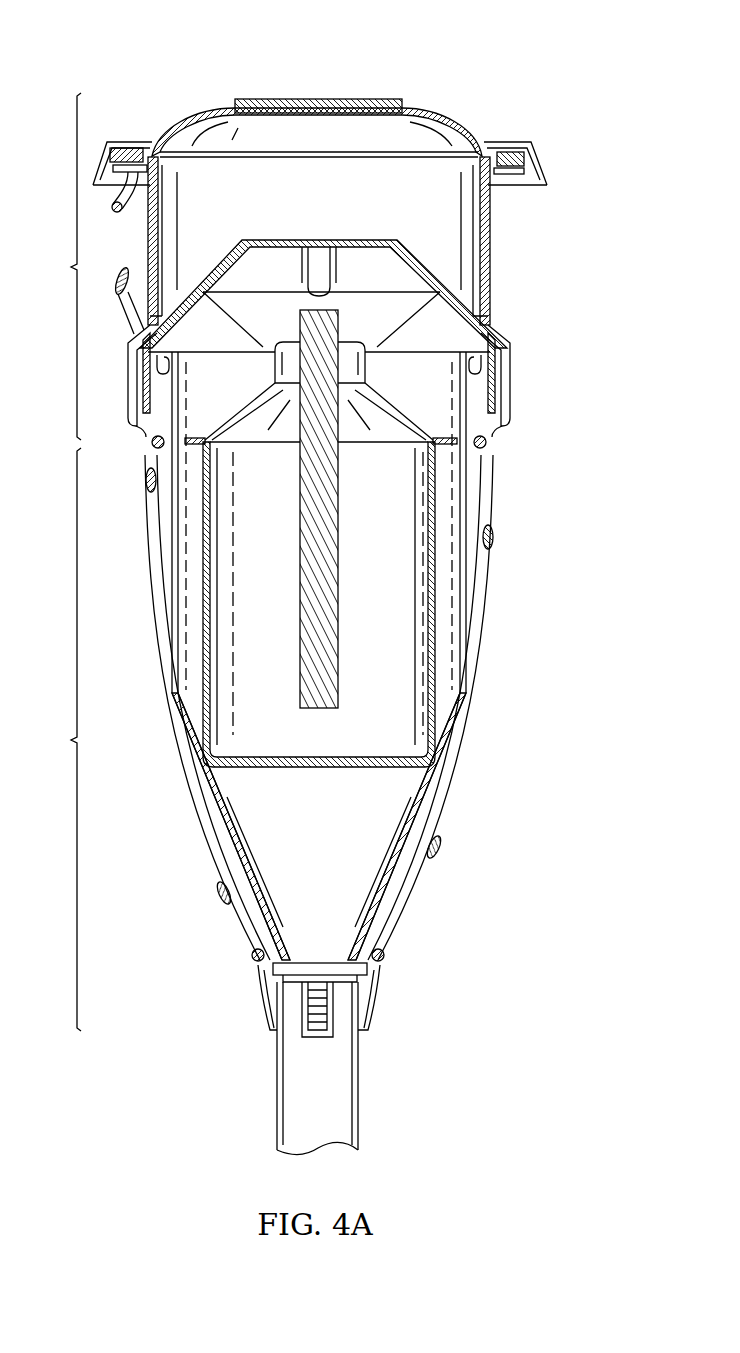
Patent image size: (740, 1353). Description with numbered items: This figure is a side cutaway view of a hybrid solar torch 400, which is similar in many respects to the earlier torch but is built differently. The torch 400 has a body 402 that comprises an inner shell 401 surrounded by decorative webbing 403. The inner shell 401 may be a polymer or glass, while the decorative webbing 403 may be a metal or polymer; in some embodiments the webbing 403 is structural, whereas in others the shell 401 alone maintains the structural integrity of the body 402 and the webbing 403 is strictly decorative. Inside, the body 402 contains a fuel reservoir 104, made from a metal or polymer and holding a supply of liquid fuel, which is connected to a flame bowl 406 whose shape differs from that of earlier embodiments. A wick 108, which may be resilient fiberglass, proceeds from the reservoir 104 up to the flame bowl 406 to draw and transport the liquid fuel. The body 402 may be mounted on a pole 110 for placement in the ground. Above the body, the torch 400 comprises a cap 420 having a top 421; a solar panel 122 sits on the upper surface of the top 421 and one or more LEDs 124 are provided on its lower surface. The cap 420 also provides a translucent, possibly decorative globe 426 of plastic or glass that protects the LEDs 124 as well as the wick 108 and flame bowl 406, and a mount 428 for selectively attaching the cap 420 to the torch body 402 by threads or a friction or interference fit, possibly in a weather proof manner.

The torch 400 is at (471, 56).
The cap 420 is at (52, 266).
The body 402 is at (52, 739).
The LEDs 124 is at (409, 169).
The solar panel 122 is at (358, 100).
The globe 426 is at (490, 252).
The top 421 is at (547, 164).
The flame bowl 406 is at (366, 253).
The mount 428 is at (510, 368).
The fuel reservoir 104 is at (298, 746).
The wick 108 is at (338, 555).
The inner shell 401 is at (470, 478).
The decorative webbing 403 is at (196, 850).
The pole 110 is at (277, 1097).